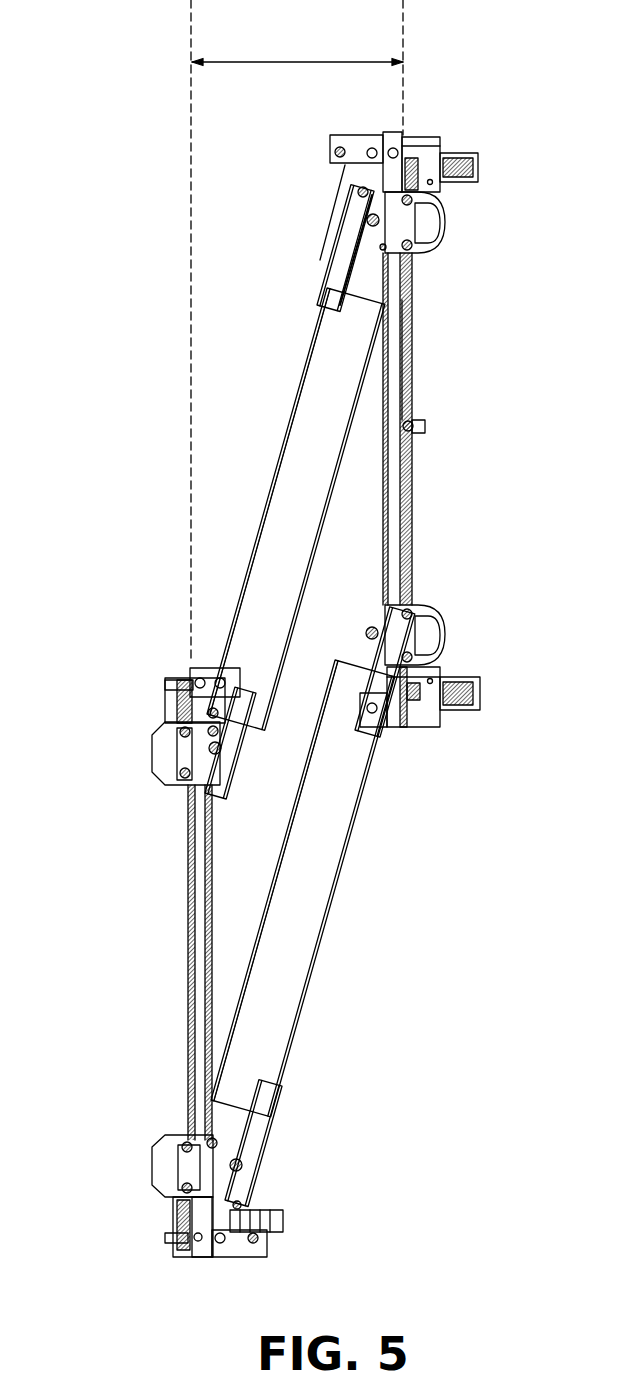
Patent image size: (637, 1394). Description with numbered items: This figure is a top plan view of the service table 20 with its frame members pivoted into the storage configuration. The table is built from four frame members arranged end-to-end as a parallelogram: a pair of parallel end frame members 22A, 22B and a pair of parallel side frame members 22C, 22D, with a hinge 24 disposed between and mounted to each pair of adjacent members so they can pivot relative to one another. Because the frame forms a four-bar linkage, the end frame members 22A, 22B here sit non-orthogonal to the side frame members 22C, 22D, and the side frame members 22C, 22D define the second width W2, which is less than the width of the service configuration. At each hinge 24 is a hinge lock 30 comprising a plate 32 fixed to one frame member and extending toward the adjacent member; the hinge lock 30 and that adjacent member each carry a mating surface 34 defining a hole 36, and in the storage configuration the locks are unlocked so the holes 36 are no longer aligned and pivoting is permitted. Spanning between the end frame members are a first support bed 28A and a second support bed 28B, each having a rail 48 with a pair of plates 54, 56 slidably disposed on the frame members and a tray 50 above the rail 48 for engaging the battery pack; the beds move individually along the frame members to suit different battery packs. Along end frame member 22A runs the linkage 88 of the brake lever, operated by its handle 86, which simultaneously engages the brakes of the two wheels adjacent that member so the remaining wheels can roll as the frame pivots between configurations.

The service table 20 is at (96, 1290).
The end frame member 22A is at (395, 520).
The end frame member 22B is at (205, 958).
The side frame member 22C is at (265, 1103).
The side frame member 22D is at (335, 295).
The hinge 24 is at (410, 118).
The first support bed 28A is at (335, 895).
The second support bed 28B is at (281, 432).
The hinge lock 30 is at (347, 130).
The plate 32 is at (386, 140).
The mating surface 34 is at (350, 162).
The hole 36 is at (335, 152).
The rail 48 is at (348, 275).
The tray 50 is at (300, 492).
The plate 54 is at (438, 225).
The plate 56 is at (166, 753).
The handle 86 is at (420, 425).
The linkage 88 is at (410, 338).
The second width W2 is at (297, 62).